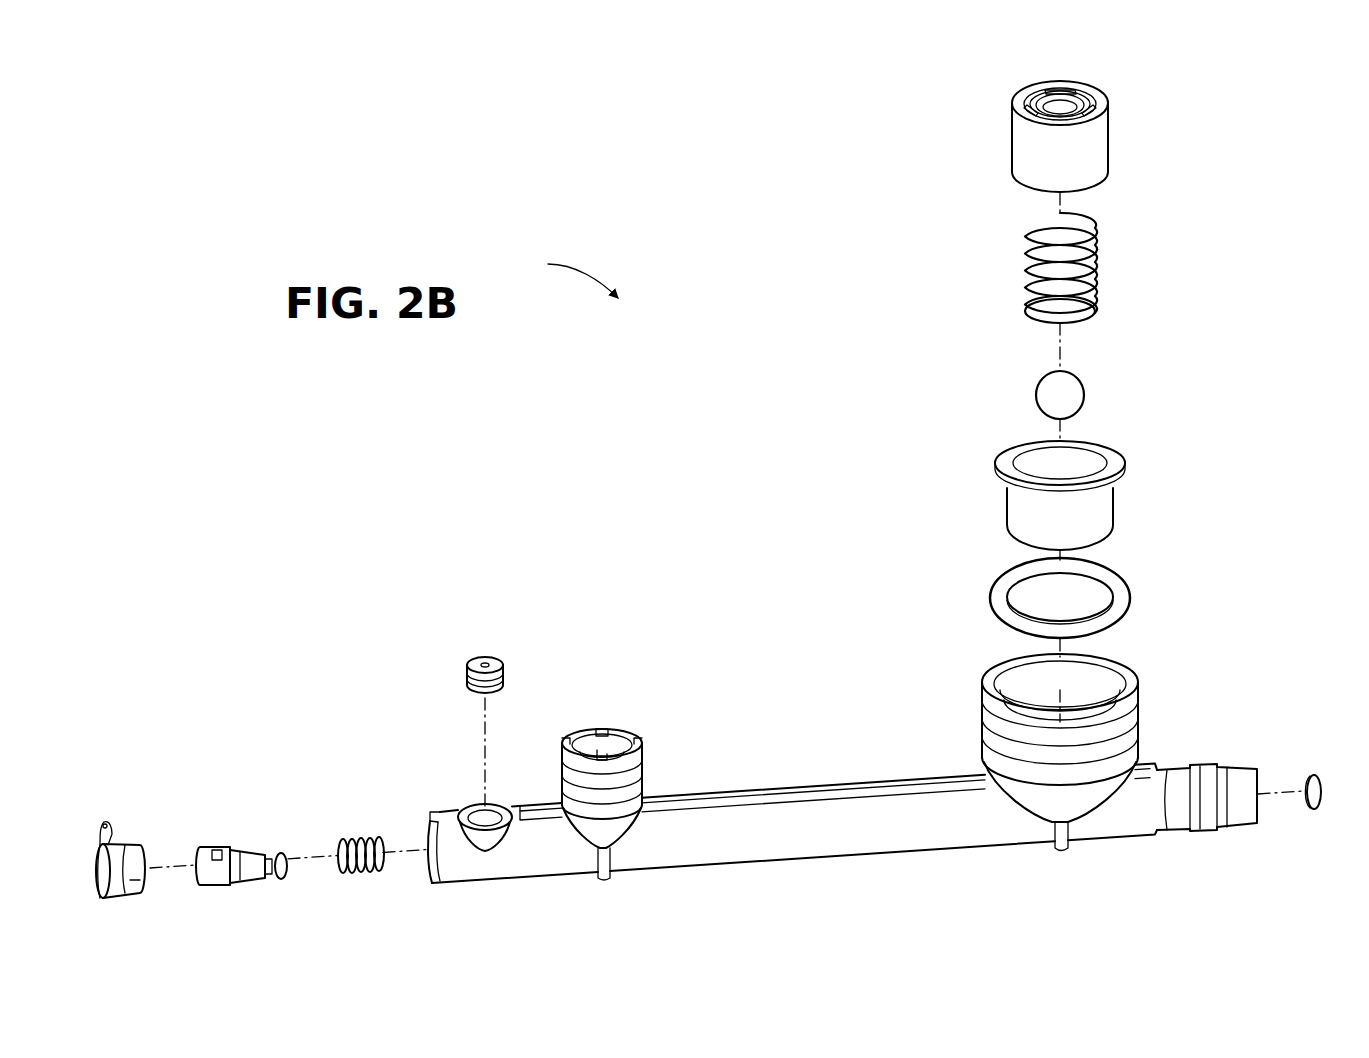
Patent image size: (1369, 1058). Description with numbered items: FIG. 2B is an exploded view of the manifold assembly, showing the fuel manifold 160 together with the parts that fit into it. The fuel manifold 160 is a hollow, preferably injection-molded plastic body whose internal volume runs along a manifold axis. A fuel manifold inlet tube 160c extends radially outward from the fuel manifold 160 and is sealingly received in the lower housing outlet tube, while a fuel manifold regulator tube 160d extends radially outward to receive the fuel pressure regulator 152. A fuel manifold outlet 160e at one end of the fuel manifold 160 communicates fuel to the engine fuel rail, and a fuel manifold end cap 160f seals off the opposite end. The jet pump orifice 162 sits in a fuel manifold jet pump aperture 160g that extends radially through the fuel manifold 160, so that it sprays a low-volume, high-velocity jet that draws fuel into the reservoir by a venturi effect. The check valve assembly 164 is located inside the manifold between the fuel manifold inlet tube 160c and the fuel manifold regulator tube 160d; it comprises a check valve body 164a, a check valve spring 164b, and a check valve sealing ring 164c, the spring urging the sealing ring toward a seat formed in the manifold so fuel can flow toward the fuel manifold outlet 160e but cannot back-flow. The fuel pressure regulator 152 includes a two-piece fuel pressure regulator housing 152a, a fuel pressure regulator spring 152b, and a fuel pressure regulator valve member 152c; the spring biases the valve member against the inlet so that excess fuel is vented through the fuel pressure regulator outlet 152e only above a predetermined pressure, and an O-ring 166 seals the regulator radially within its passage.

The fuel pressure regulator 152 is at (872, 177).
The fuel pressure regulator housing 152a is at (1018, 143).
The fuel pressure regulator spring 152b is at (1092, 243).
The fuel pressure regulator valve member 152c is at (1075, 391).
The fuel pressure regulator outlet 152e is at (1103, 104).
The O-ring 166 is at (1121, 587).
The fuel manifold 160 is at (812, 797).
The fuel manifold inlet tube 160c is at (643, 770).
The fuel manifold regulator tube 160d is at (987, 752).
The fuel manifold outlet 160e is at (1238, 772).
The fuel manifold end cap 160f is at (127, 850).
The fuel manifold jet pump aperture 160g is at (490, 813).
The jet pump orifice 162 is at (476, 655).
The check valve assembly 164 is at (293, 778).
The check valve body 164a is at (233, 852).
The check valve spring 164b is at (368, 838).
The check valve sealing ring 164c is at (1318, 775).